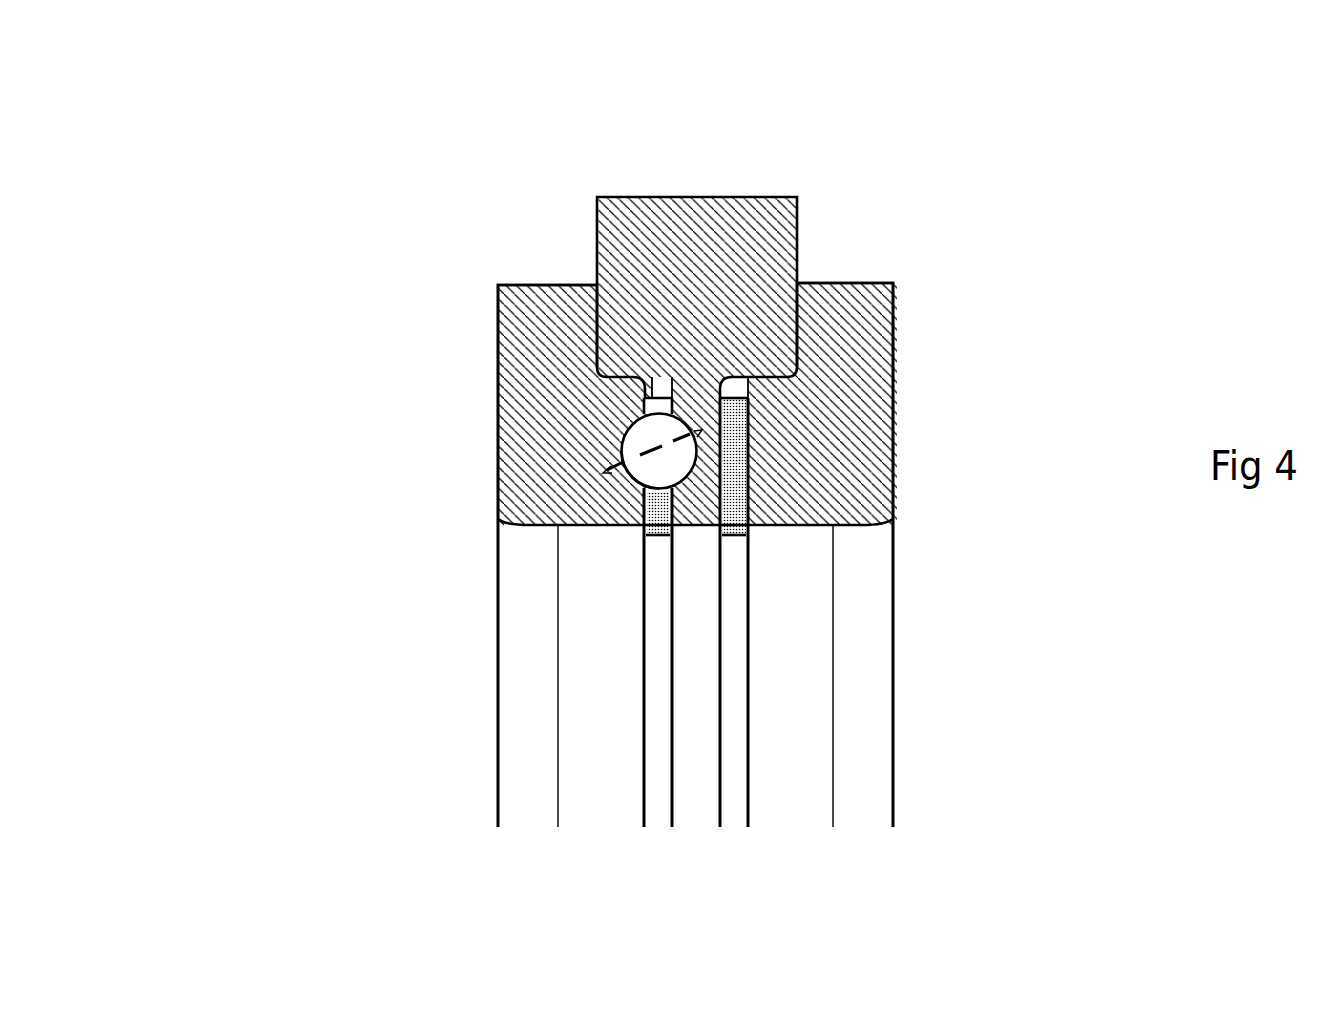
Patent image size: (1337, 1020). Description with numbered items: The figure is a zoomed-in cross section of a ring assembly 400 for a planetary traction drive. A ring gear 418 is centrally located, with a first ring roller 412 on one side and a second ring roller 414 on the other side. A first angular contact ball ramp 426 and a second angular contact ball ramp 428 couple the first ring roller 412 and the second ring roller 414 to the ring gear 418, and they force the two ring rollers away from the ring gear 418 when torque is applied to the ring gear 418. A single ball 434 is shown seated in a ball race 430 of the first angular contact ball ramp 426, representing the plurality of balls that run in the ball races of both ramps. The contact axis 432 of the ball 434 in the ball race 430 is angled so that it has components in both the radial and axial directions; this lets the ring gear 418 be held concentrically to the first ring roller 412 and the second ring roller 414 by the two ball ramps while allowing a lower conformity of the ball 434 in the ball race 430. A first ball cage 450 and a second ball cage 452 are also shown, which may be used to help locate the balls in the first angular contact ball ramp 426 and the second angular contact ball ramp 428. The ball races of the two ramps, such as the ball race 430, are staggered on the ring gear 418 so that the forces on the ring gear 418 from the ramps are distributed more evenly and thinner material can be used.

The ring assembly 400 is at (354, 187).
The first ring roller 412 is at (548, 358).
The second ring roller 414 is at (860, 360).
The ring gear 418 is at (670, 257).
The first angular contact ball ramp 426 is at (654, 548).
The second angular contact ball ramp 428 is at (733, 548).
The ball race 430 is at (625, 474).
The contact axis 432 is at (622, 448).
The ball 434 is at (642, 440).
The first ball cage 450 is at (643, 552).
The second ball cage 452 is at (732, 472).